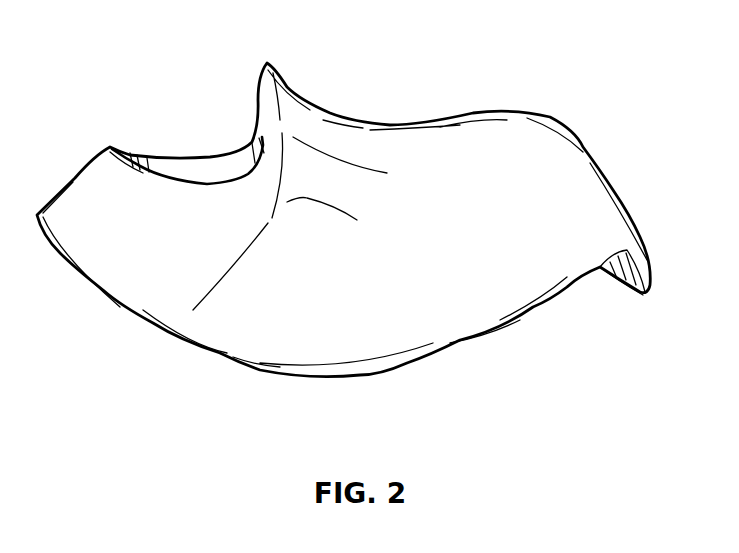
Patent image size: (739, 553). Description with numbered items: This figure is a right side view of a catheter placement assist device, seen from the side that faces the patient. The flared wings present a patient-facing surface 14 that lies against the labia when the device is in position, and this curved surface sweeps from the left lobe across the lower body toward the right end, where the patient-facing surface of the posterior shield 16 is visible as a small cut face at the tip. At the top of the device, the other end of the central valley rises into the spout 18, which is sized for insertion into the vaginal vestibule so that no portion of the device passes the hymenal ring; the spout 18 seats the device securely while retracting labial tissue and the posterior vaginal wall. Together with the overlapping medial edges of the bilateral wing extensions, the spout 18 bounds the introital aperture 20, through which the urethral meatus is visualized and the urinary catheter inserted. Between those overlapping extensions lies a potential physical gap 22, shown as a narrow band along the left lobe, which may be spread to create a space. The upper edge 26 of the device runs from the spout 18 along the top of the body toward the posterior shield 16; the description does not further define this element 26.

The patient-facing surface 14 is at (407, 366).
The posterior shield 16 is at (620, 288).
The spout 18 is at (268, 60).
The introital aperture 20 is at (200, 126).
The potential physical gap 22 is at (157, 163).
The upper edge 26 is at (423, 120).